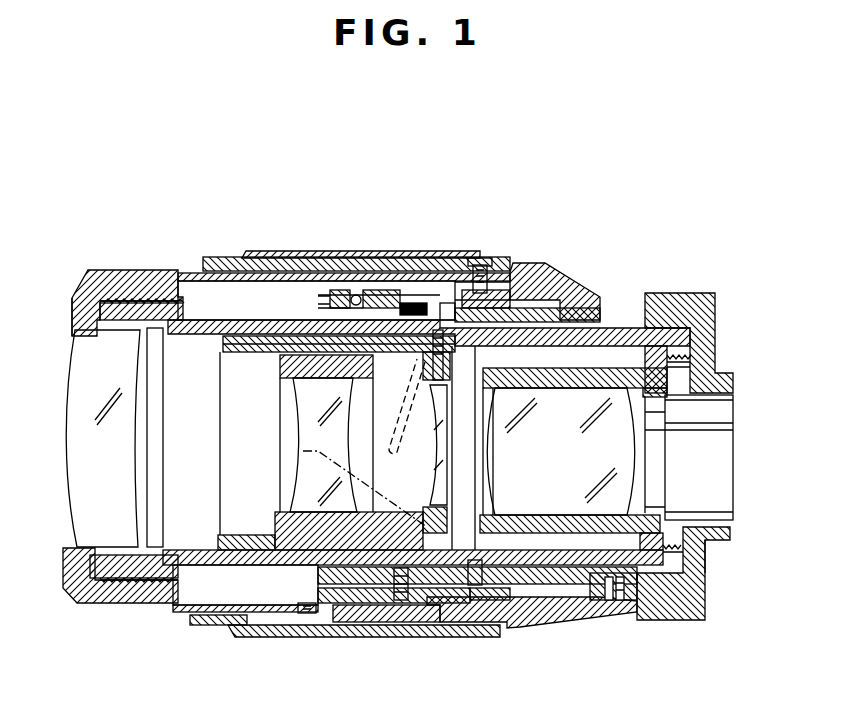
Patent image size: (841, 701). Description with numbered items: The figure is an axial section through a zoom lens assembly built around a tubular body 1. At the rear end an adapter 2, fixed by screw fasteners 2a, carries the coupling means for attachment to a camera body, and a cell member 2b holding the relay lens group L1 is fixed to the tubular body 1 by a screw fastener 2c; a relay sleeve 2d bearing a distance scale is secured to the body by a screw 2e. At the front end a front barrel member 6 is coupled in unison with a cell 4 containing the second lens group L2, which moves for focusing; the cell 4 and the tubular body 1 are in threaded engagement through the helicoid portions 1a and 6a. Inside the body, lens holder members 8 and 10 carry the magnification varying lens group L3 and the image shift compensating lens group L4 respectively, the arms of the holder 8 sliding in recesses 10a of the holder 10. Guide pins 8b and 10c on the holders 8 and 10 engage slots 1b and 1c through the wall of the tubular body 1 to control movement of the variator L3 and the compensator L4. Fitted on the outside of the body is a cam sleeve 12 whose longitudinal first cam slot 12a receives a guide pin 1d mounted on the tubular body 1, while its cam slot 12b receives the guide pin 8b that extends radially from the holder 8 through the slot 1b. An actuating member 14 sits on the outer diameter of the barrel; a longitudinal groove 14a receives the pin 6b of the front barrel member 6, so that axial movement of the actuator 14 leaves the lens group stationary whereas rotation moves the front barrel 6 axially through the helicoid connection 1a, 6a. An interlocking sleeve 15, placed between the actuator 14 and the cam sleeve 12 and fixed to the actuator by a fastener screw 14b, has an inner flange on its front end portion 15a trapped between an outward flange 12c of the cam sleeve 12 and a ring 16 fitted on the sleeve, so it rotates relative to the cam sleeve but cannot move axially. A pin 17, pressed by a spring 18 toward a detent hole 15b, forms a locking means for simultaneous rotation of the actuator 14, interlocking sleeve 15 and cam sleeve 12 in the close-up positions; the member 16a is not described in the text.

The tubular body 1 is at (613, 328).
The helicoid portion 1a is at (100, 585).
The slot 1b is at (388, 490).
The slot 1c is at (410, 398).
The guide pin 1d is at (473, 258).
The adapter 2 is at (670, 315).
The screw fasteners 2a is at (700, 360).
The cell member 2b is at (543, 514).
The screw fastener 2c is at (693, 552).
The relay sleeve 2d is at (601, 600).
The screw 2e is at (616, 600).
The cell 4 is at (80, 312).
The front barrel member 6 is at (137, 280).
The helicoid portion 6a is at (147, 585).
The pin 6b is at (307, 616).
The lens holder member 8 is at (283, 545).
The guide pin 8b is at (473, 586).
The lens holder member 10 is at (357, 338).
The recesses 10a is at (235, 346).
The guide pin 10c is at (449, 303).
The cam sleeve 12 is at (413, 290).
The first cam slot 12a is at (553, 322).
The third cam slot 12b is at (490, 628).
The outward flange 12c is at (360, 296).
The actuating member 14 is at (218, 256).
The longitudinal groove 14a is at (350, 628).
The fastener screw 14b is at (482, 268).
The interlocking sleeve 15 is at (537, 282).
The front end portion 15a is at (362, 605).
The detent hole 15b is at (392, 282).
The ring 16 is at (438, 330).
The screw 16a is at (403, 598).
The pin 17 is at (293, 251).
The spring 18 is at (320, 296).
The relay lens group L1 is at (498, 460).
The second lens group L2 is at (90, 475).
The magnification varying lens group L3 is at (313, 432).
The image shift compensating lens group L4 is at (433, 447).